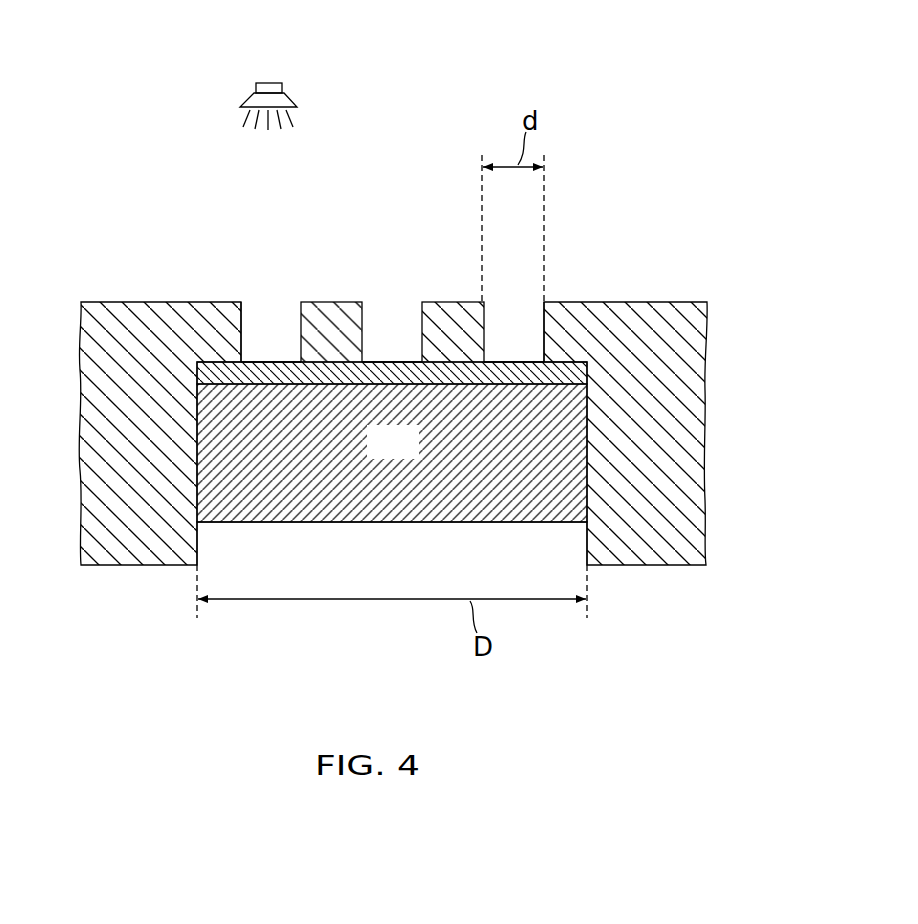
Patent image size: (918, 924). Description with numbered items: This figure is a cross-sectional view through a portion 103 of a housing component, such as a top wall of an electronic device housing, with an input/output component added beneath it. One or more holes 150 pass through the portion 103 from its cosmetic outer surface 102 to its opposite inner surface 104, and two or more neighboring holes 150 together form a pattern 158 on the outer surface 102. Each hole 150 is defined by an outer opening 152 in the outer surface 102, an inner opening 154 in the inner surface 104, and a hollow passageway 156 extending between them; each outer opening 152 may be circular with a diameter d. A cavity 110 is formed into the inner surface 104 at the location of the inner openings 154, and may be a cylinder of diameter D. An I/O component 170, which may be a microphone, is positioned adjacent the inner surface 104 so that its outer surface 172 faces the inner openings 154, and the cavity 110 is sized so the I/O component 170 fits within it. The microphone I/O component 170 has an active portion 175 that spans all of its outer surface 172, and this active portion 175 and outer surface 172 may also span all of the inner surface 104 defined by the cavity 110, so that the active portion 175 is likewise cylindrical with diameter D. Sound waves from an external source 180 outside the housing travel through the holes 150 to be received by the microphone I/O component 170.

The outer surface 102 is at (103, 302).
The portion of housing component 103 is at (402, 686).
The inner surface 104 is at (240, 360).
The cavity 110 is at (411, 557).
The holes 150 is at (500, 294).
The outer opening 152 is at (267, 292).
The inner opening 154 is at (287, 361).
The hollow passageway 156 is at (280, 326).
The pattern of holes 158 is at (481, 77).
The I/O component 170 is at (413, 456).
The outer surface of I/O component 172 is at (262, 361).
The active portion 175 is at (302, 375).
The external source 180 is at (282, 89).